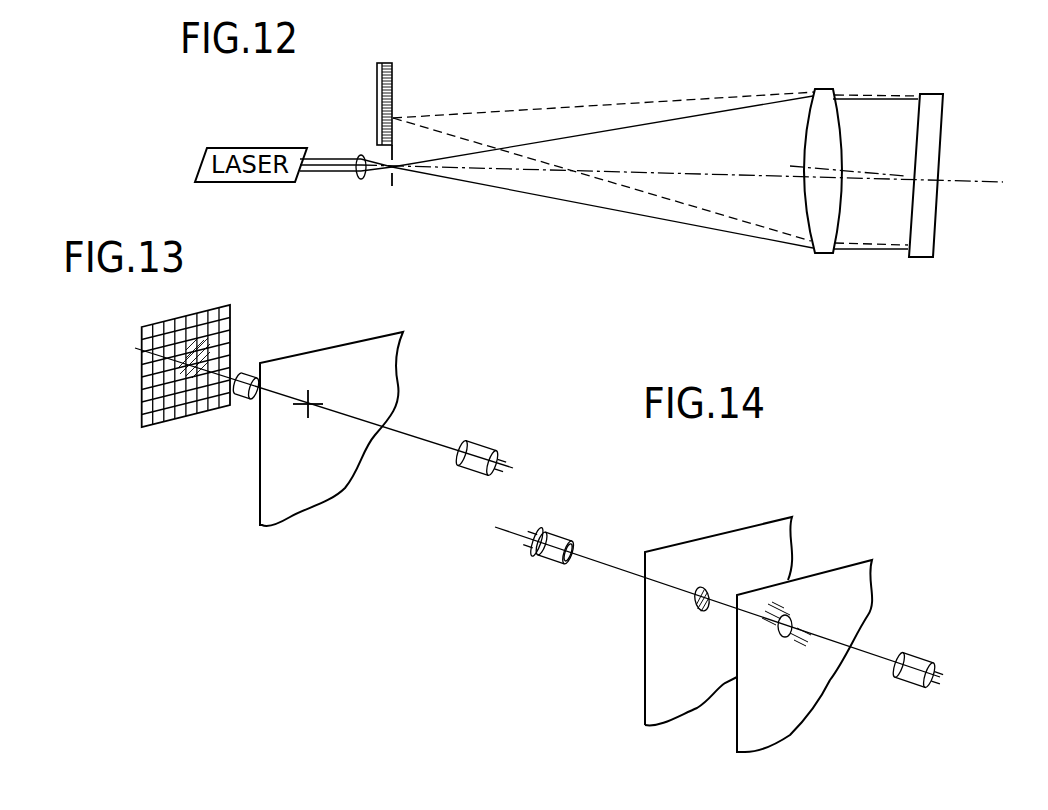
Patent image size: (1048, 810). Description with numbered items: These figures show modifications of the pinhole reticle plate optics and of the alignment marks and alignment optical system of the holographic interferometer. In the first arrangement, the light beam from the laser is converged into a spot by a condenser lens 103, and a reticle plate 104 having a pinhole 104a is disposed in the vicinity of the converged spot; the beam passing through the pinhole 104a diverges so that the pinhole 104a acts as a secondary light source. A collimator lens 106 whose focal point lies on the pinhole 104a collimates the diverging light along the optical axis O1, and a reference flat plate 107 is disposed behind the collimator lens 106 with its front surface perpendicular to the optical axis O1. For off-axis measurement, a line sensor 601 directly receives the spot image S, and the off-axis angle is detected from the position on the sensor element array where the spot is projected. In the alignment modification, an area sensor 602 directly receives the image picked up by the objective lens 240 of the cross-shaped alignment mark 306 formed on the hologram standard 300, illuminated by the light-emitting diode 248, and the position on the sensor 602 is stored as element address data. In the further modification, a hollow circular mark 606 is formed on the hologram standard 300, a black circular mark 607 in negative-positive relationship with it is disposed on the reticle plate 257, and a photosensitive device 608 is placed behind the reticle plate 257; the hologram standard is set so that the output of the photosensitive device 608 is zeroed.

In FIG. 12, the condenser lens 103 is at (362, 179).
In FIG. 12, the reticle plate 104 is at (391, 184).
In FIG. 12, the pinhole 104a is at (394, 166).
In FIG. 12, the spot image S is at (394, 118).
In FIG. 12, the line sensor 601 is at (390, 58).
In FIG. 12, the optical axis O1 is at (532, 172).
In FIG. 12, the collimator lens 106 is at (822, 230).
In FIG. 12, the reference flat plate 107 is at (933, 117).
In FIG. 13, the area sensor 602 is at (233, 316).
In FIG. 13, the objective lens 240 is at (243, 397).
In FIG. 13, the hologram standard 300 is at (355, 348).
In FIG. 14, the hologram standard 300 is at (850, 570).
In FIG. 13, the alignment mark 306 is at (320, 404).
In FIG. 13, the light-emitting diode 248 is at (481, 447).
In FIG. 14, the light-emitting diode 248 is at (917, 663).
In FIG. 14, the photosensitive device 608 is at (557, 538).
In FIG. 14, the reticle plate 257 is at (705, 545).
In FIG. 14, the black circular mark 607 is at (711, 590).
In FIG. 14, the hollow circular mark 606 is at (794, 622).